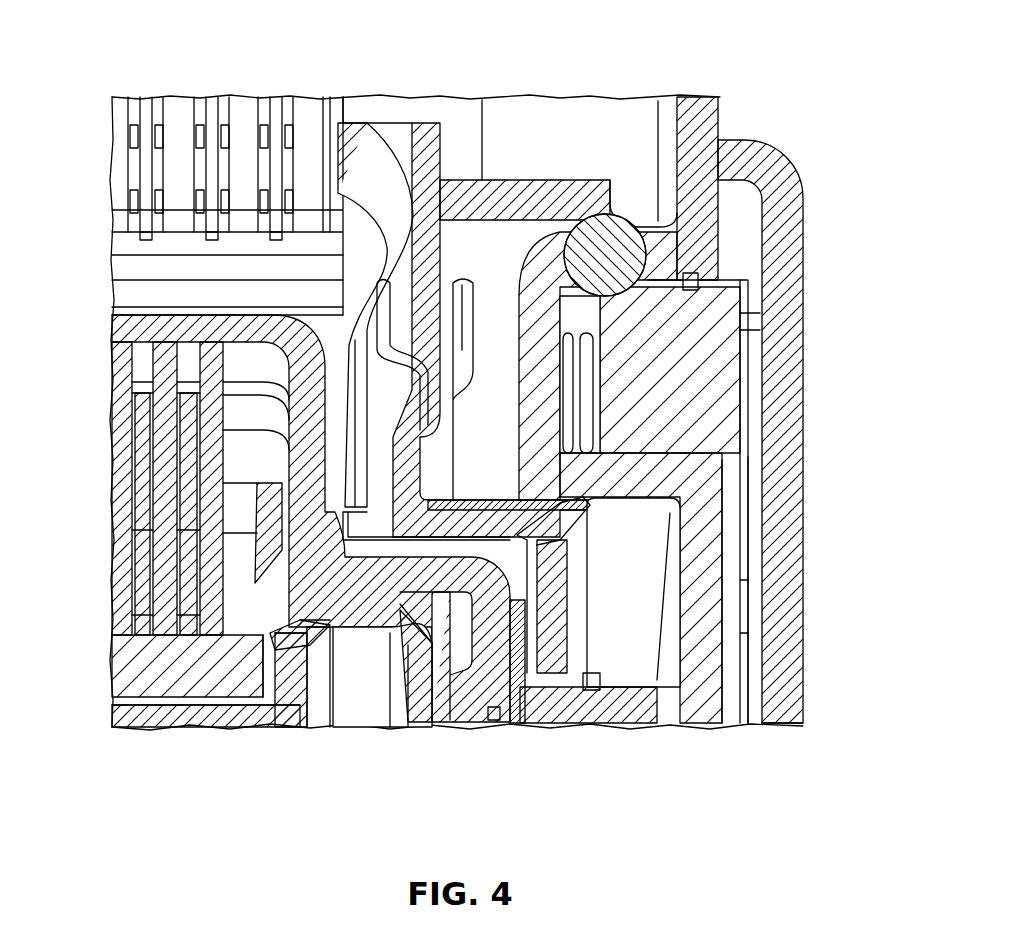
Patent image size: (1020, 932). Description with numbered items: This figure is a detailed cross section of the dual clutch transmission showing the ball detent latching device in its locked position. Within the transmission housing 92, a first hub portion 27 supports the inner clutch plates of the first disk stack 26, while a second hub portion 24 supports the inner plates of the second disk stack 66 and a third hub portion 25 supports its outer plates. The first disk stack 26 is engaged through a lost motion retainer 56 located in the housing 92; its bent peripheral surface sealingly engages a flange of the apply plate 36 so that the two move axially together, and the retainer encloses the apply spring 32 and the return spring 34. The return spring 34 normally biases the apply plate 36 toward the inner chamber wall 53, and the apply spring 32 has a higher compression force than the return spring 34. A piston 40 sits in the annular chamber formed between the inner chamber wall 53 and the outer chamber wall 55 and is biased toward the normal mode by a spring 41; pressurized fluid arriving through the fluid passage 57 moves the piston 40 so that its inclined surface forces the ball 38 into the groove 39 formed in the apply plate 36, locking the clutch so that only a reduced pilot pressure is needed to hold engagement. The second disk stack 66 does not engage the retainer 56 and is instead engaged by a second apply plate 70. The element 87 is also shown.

The second hub portion 24 is at (155, 668).
The third hub portion 25 is at (137, 325).
The first disk stack 26 is at (147, 150).
The first hub portion 27 is at (147, 272).
The apply spring 32 is at (360, 158).
The return spring 34 is at (393, 317).
The apply plate 36 is at (510, 207).
The ball 38 is at (623, 252).
The groove 39 is at (610, 207).
The piston 40 is at (675, 377).
The spring 41 is at (593, 397).
The inner chamber wall 53 is at (560, 423).
The outer chamber wall 55 is at (790, 345).
The lost motion retainer 56 is at (352, 108).
The fluid passage 57 is at (752, 325).
The second disk stack 66 is at (168, 553).
The second apply plate 70 is at (417, 700).
The wall 87 is at (735, 660).
The transmission housing 92 is at (778, 708).